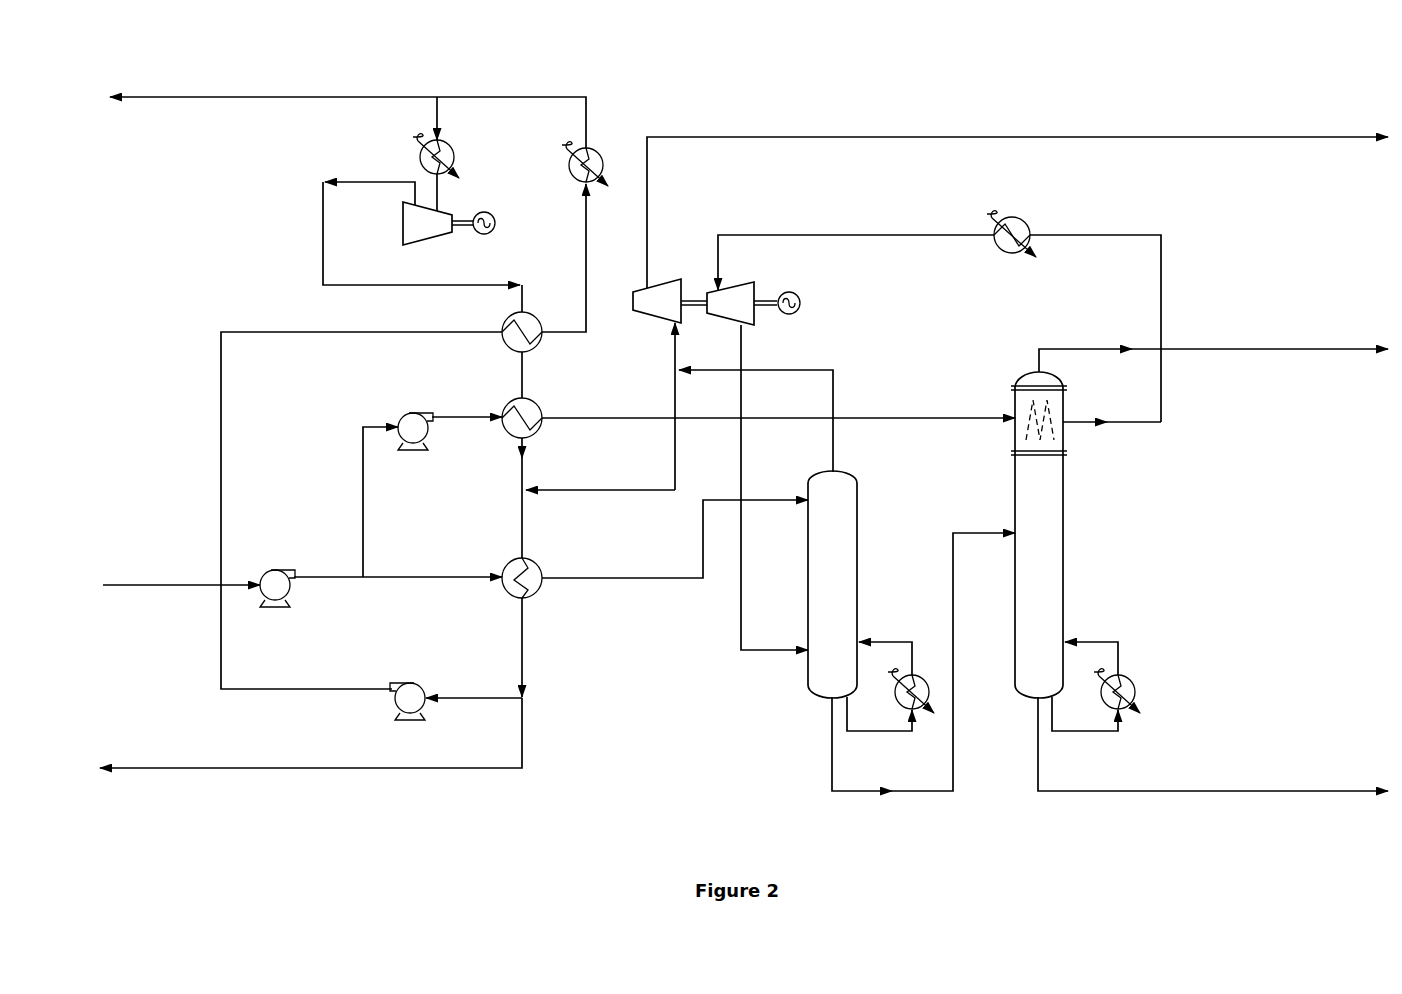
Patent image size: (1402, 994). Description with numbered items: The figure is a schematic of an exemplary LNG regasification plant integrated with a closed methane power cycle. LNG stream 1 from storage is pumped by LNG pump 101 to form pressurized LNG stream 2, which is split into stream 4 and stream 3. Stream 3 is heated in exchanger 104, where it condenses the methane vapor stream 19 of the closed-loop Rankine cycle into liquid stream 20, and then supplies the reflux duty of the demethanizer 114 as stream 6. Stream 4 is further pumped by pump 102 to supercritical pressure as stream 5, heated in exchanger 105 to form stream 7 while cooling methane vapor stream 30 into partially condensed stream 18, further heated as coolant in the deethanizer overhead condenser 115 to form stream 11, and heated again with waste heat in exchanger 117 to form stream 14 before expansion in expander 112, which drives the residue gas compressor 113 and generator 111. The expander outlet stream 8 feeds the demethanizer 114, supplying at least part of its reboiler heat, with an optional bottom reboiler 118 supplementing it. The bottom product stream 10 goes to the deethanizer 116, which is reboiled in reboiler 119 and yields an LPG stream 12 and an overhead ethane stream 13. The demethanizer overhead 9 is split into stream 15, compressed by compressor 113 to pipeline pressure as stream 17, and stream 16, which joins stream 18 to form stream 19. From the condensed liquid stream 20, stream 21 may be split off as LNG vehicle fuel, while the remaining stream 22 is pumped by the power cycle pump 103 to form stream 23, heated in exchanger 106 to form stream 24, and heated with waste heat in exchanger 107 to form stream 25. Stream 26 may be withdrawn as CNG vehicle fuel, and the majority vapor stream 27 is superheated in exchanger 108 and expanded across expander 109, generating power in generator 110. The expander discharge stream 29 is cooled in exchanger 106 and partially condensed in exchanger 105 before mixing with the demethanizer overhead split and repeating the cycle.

The LNG stream 1 is at (152, 586).
The pressurized LNG stream 2 is at (312, 576).
The stream 3 is at (390, 576).
The stream 4 is at (363, 425).
The stream 5 is at (462, 417).
The stream 6 is at (630, 580).
The stream 7 is at (615, 420).
The expander outlet stream 8 is at (741, 652).
The demethanizer overhead 9 is at (786, 372).
The bottom product stream 10 is at (836, 792).
The stream 11 is at (1132, 235).
The stream 12 is at (1255, 792).
The overhead ethane stream 13 is at (1297, 349).
The stream 14 is at (913, 235).
The stream 15 is at (675, 350).
The stream 16 is at (674, 503).
The stream 17 is at (1030, 137).
The partially condensed stream 18 is at (522, 474).
The methane vapor stream 19 is at (522, 528).
The liquid stream 20 is at (522, 634).
The stream 21 is at (283, 768).
The stream 22 is at (492, 700).
The stream 23 is at (221, 655).
The stream 24 is at (586, 276).
The stream 25 is at (527, 97).
The stream 26 is at (306, 97).
The stream 27 is at (442, 107).
The expander discharge stream 29 is at (441, 187).
The methane vapor stream 30 is at (522, 370).
The LNG pump 101 is at (283, 568).
The pump 102 is at (414, 412).
The power cycle pump 103 is at (403, 684).
The exchanger 104 is at (537, 563).
The exchanger 105 is at (538, 405).
The exchanger 106 is at (539, 346).
The exchanger 107 is at (598, 152).
The exchanger 108 is at (457, 152).
The expander 109 is at (432, 241).
The generator 110 is at (492, 215).
The generator 111 is at (800, 296).
The expander 112 is at (757, 283).
The residue gas compressor 113 is at (669, 289).
The demethanizer 114 is at (860, 484).
The overhead condenser 115 is at (1067, 412).
The deethanizer 116 is at (1066, 536).
The exchanger 117 is at (1026, 222).
The bottom reboiler 118 is at (918, 675).
The reboiler 119 is at (1131, 680).